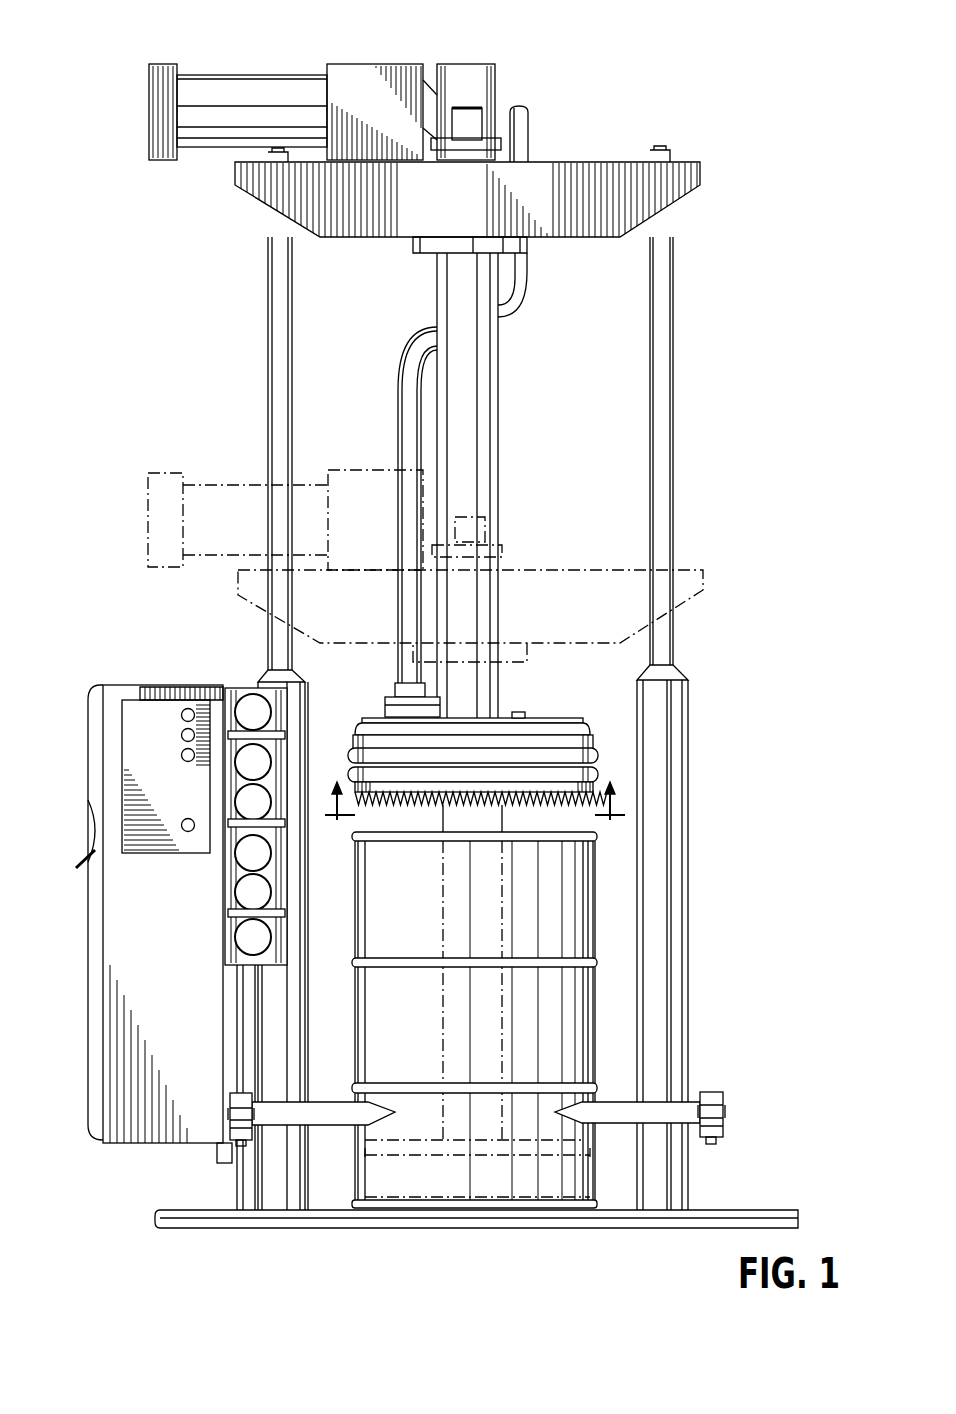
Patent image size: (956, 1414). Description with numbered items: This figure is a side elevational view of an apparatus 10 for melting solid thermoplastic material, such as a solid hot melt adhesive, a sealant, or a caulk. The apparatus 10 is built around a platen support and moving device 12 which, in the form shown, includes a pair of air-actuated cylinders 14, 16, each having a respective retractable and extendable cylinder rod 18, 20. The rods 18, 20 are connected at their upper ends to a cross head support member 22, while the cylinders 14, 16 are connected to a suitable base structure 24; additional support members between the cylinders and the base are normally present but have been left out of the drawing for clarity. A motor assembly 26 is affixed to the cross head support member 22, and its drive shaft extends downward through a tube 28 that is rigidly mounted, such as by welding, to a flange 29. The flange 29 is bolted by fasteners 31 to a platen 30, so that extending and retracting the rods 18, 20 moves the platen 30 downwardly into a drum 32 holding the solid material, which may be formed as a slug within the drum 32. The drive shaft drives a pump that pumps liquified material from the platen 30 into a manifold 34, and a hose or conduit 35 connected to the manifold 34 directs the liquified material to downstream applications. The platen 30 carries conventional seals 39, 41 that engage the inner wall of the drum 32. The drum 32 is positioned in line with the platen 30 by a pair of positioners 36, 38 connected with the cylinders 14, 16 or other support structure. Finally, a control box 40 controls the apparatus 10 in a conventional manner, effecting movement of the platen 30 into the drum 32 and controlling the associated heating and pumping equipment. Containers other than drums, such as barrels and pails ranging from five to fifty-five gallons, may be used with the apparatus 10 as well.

The apparatus 10 is at (697, 43).
The platen support and moving device 12 is at (490, 389).
The air-actuated cylinder 14 is at (683, 668).
The air-actuated cylinder 16 is at (265, 672).
The cylinder rod 18 is at (673, 328).
The cylinder rod 20 is at (293, 328).
The cross head support member 22 is at (560, 162).
The base structure 24 is at (740, 1210).
The motor assembly 26 is at (372, 64).
The tube 28 is at (500, 406).
The flange 29 is at (540, 716).
The platen 30 is at (542, 961).
The fastener 31 is at (518, 712).
The drum 32 is at (592, 917).
The manifold 34 is at (385, 697).
The hose or conduit 35 is at (522, 108).
The positioner 36 is at (712, 1092).
The positioner 38 is at (313, 1102).
The seal 39 is at (598, 757).
The control box 40 is at (154, 924).
The seal 41 is at (598, 775).